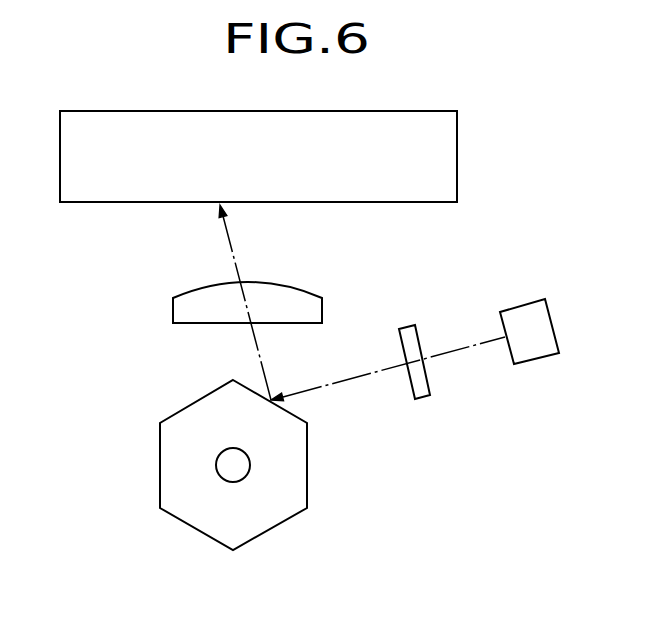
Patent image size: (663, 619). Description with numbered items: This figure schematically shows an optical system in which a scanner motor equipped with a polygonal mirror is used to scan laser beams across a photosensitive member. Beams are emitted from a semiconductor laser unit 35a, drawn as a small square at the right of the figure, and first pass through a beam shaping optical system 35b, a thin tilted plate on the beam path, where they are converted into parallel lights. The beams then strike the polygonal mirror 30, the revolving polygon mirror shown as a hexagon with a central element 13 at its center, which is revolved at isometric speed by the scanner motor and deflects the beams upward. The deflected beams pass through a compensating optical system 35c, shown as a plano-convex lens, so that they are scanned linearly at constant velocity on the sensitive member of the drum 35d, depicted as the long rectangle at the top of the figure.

The drum 35d is at (111, 135).
The compensating optical system 35c is at (297, 303).
The beam shaping optical system 35b is at (410, 333).
The semiconductor laser unit 35a is at (527, 315).
The polygonal mirror 30 is at (192, 470).
The shaft 13 is at (242, 466).